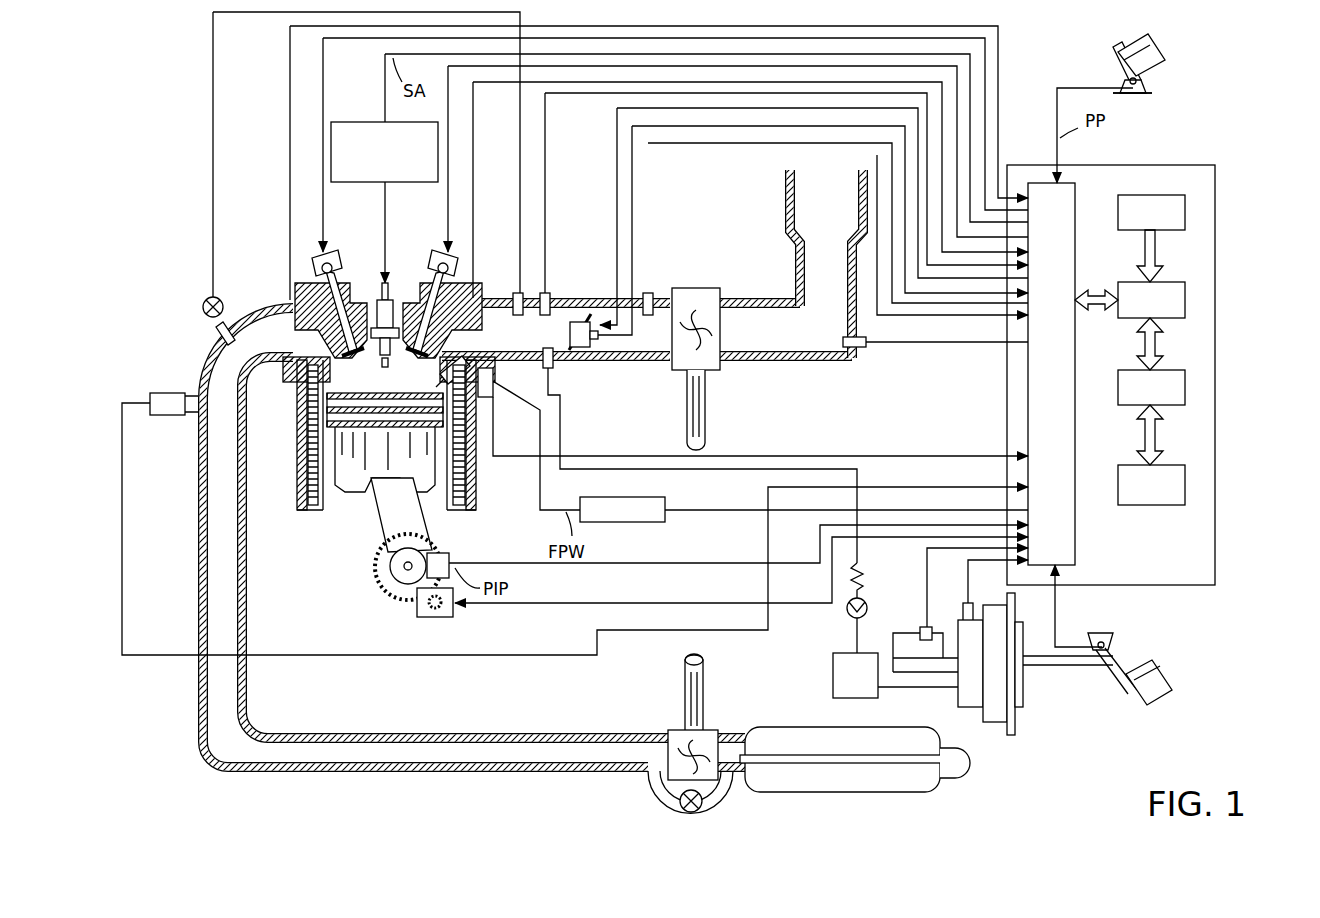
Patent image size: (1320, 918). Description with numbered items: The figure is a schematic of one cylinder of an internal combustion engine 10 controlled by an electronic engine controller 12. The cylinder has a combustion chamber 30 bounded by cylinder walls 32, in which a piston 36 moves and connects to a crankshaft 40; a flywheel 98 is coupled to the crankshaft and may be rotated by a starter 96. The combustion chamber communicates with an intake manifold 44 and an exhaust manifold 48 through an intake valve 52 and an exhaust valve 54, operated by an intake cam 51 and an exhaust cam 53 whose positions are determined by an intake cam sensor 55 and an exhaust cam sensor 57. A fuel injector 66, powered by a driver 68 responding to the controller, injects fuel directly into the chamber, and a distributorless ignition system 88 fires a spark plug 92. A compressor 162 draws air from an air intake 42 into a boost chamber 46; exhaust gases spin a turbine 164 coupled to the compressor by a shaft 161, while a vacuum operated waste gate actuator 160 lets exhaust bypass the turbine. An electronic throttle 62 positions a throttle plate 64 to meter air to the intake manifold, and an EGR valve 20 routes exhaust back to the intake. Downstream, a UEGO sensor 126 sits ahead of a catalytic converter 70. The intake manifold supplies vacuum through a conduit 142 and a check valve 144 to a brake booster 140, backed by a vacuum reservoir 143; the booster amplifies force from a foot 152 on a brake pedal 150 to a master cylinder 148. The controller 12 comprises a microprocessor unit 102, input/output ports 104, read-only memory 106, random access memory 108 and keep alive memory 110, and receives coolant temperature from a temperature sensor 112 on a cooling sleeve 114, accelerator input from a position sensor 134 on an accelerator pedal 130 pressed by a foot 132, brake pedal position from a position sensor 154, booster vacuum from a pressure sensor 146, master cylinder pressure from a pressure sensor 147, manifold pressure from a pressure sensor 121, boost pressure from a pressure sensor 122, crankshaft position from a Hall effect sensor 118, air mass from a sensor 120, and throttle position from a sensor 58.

The internal combustion engine 10 is at (143, 190).
The electronic engine controller 12 is at (1205, 165).
The EGR valve 20 is at (204, 306).
The combustion chamber 30 is at (372, 400).
The cylinder walls 32 is at (330, 512).
The piston 36 is at (372, 468).
The crankshaft 40 is at (392, 572).
The air intake 42 is at (839, 214).
The intake manifold 44 is at (536, 344).
The boost chamber 46 is at (657, 344).
The exhaust manifold 48 is at (274, 351).
The intake cam 51 is at (446, 252).
The intake valve 52 is at (428, 342).
The exhaust cam 53 is at (325, 252).
The exhaust valve 54 is at (335, 325).
The intake cam sensor 55 is at (455, 268).
The exhaust cam sensor 57 is at (315, 265).
The throttle position sensor 58 is at (598, 340).
The electronic throttle 62 is at (578, 318).
The throttle plate 64 is at (590, 320).
The fuel injector 66 is at (470, 380).
The driver 68 is at (598, 523).
The catalytic converter 70 is at (800, 792).
The distributorless ignition system 88 is at (345, 120).
The spark plug 92 is at (388, 283).
The starter 96 is at (452, 614).
The flywheel 98 is at (398, 600).
The microprocessor unit 102 is at (1185, 300).
The input/output ports 104 is at (1075, 195).
The read-only memory 106 is at (1185, 212).
The random access memory 108 is at (1185, 390).
The keep alive memory 110 is at (1185, 482).
The temperature sensor 112 is at (493, 445).
The cooling sleeve 114 is at (472, 487).
The Hall effect sensor 118 is at (449, 560).
The air mass sensor 120 is at (866, 347).
The pressure sensor 121 is at (548, 291).
The pressure sensor 122 is at (650, 292).
The Universal Exhaust Gas Oxygen sensor 126 is at (148, 395).
The accelerator pedal 130 is at (1115, 58).
The foot 132 is at (1163, 52).
The position sensor 134 is at (1146, 84).
The brake booster 140 is at (955, 707).
The conduit 142 is at (561, 412).
The vacuum reservoir 143 is at (833, 670).
The check valve 144 is at (850, 620).
The pressure sensor 146 is at (970, 603).
The pressure sensor 147 is at (930, 625).
The master cylinder 148 is at (893, 633).
The brake pedal 150 is at (1128, 694).
The foot 152 is at (1140, 670).
The position sensor 154 is at (1092, 640).
The waste gate actuator 160 is at (680, 806).
The shaft 161 is at (686, 404).
The compressor 162 is at (700, 288).
The turbine 164 is at (672, 730).